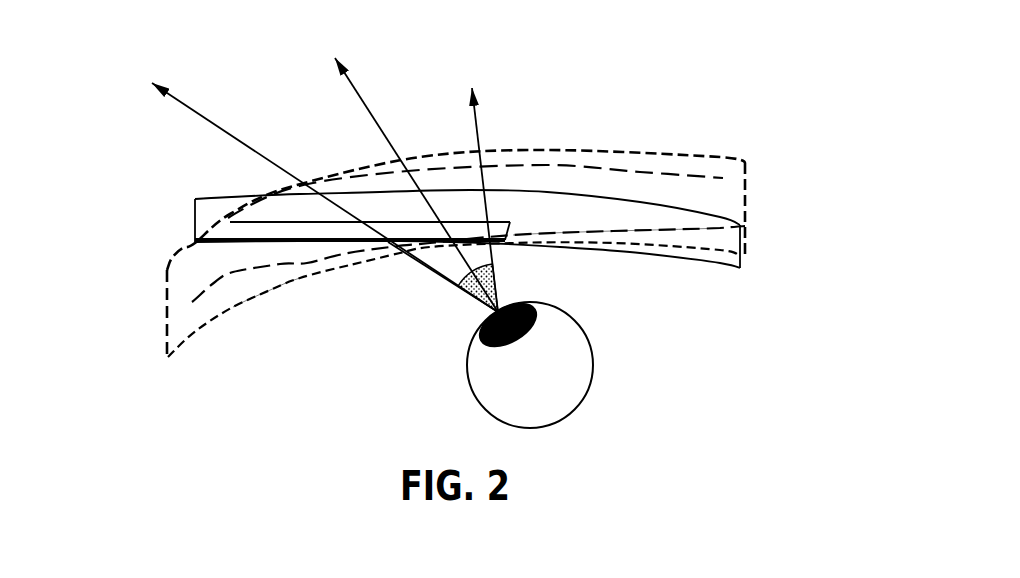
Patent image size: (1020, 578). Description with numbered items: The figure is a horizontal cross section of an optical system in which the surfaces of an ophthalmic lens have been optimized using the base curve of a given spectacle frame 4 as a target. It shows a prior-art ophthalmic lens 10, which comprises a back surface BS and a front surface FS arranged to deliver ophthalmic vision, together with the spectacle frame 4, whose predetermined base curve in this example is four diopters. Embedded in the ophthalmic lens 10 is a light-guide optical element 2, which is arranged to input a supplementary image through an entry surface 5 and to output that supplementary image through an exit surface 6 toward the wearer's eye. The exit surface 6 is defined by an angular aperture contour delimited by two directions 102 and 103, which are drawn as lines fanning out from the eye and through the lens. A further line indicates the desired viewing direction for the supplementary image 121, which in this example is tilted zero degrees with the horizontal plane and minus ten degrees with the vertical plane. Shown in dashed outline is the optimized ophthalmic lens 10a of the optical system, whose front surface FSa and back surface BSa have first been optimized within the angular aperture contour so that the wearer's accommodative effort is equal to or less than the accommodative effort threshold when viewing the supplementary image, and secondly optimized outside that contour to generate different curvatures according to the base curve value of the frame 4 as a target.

The light-guide optical element 2 is at (232, 222).
The spectacle frame 4 is at (164, 344).
The entry surface 5 is at (275, 244).
The exit surface 6 is at (432, 243).
The ophthalmic lens 10 is at (192, 203).
The ophthalmic lens of the optical system 10a is at (742, 204).
The first direction 102 is at (300, 189).
The second direction 103 is at (474, 185).
The desired viewing direction for the supplementary image 121 is at (404, 169).
The front surface FS is at (212, 196).
The back surface BS is at (217, 246).
The optimized front surface FSa is at (719, 178).
The optimized back surface BSa is at (651, 226).